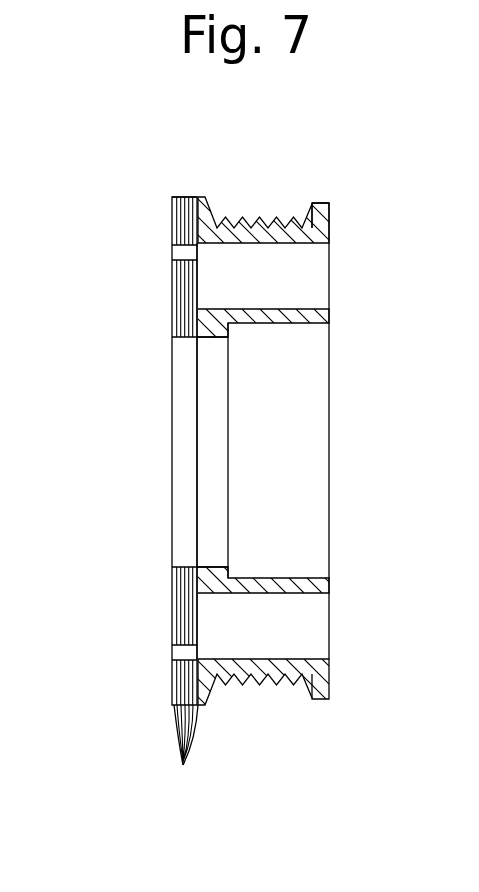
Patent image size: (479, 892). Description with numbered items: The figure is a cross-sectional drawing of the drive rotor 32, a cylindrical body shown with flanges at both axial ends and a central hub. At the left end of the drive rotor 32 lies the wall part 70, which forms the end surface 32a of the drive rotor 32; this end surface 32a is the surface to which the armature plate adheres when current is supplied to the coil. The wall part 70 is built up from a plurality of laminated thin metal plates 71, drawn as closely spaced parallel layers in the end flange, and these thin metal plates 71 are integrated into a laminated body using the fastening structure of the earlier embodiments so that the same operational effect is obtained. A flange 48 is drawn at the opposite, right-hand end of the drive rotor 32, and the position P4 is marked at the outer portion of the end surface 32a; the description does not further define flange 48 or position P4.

The drive rotor 32 is at (299, 194).
The end surface 32a is at (171, 305).
The stopper flange 48 is at (330, 228).
The position P4 is at (180, 196).
The wall part 70 is at (188, 785).
The thin metal plates 71 is at (205, 805).